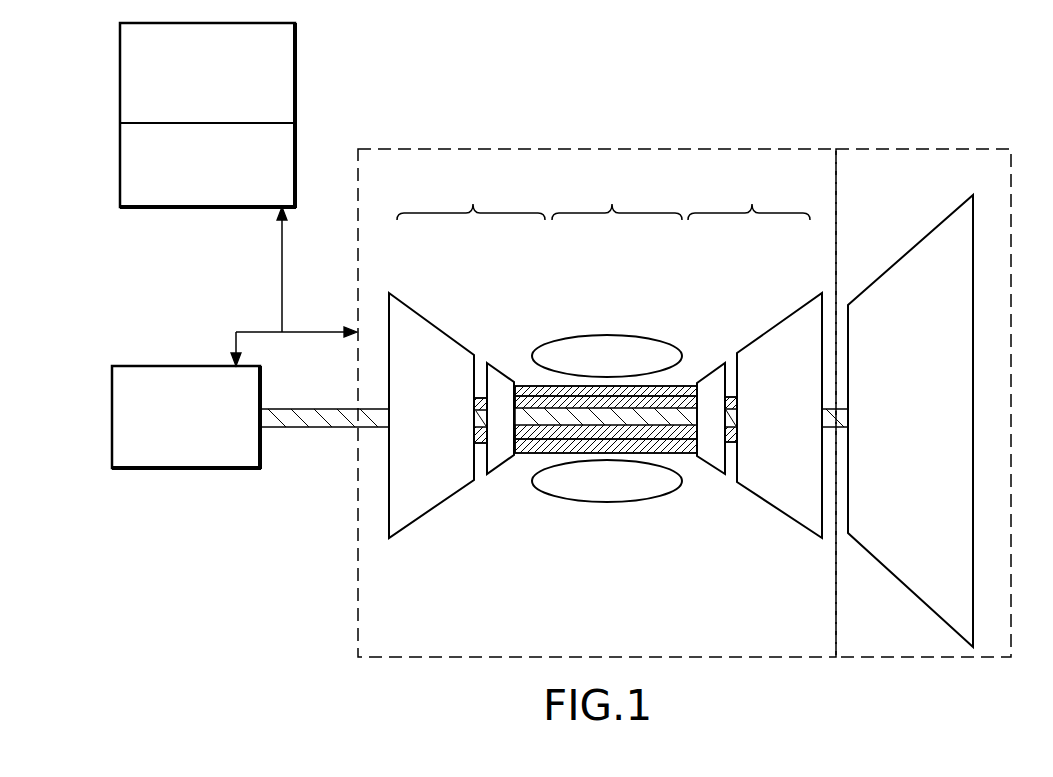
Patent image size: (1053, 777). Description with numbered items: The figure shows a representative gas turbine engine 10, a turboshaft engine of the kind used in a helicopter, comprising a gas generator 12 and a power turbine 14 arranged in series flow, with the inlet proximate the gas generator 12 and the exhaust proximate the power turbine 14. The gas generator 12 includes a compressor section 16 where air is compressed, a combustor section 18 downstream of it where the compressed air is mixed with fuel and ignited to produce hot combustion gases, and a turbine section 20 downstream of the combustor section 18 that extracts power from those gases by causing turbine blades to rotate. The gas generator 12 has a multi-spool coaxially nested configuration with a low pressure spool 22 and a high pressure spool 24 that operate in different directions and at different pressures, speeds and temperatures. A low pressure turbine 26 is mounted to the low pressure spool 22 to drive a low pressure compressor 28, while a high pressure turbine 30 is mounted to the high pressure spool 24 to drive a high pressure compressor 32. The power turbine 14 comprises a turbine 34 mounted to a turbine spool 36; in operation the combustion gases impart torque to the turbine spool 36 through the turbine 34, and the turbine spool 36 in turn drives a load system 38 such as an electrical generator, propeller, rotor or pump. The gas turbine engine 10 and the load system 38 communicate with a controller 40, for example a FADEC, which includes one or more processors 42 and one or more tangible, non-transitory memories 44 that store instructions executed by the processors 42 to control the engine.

The gas turbine engine 10 is at (865, 108).
The gas generator 12 is at (633, 149).
The power turbine 14 is at (945, 149).
The compressor section 16 is at (471, 197).
The combustor section 18 is at (617, 198).
The turbine section 20 is at (749, 197).
The low pressure spool 22 is at (478, 395).
The high pressure spool 24 is at (685, 385).
The low pressure turbine 26 is at (778, 326).
The low pressure compressor 28 is at (437, 328).
The high pressure turbine 30 is at (713, 365).
The high pressure compressor 32 is at (508, 378).
The turbine 34 is at (893, 258).
The turbine spool 36 is at (841, 407).
The load system 38 is at (186, 470).
The controller 40 is at (208, 194).
The processors 42 is at (197, 83).
The memories 44 is at (197, 175).